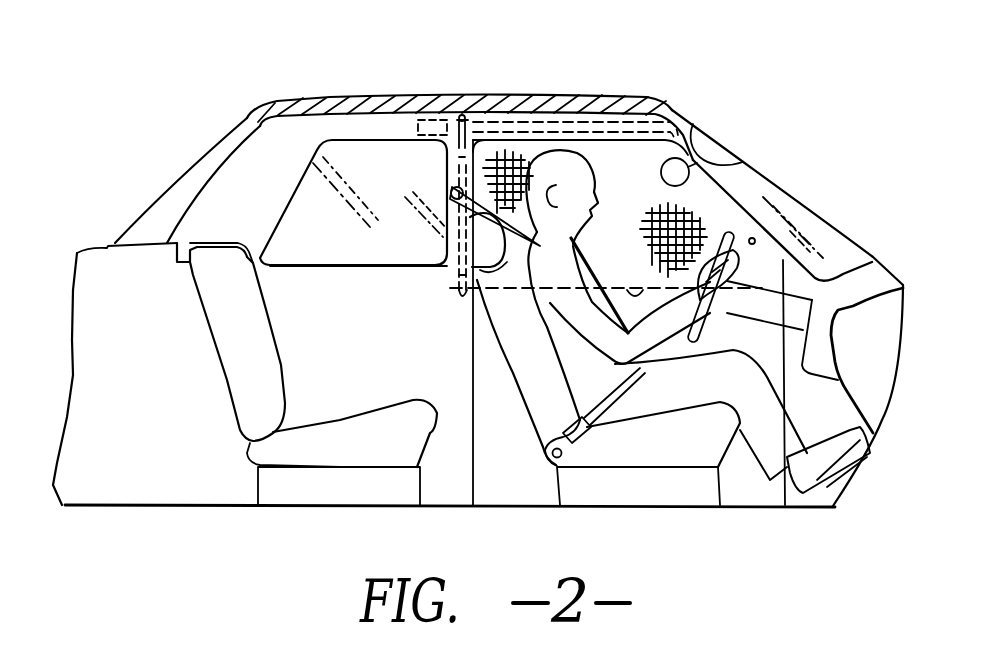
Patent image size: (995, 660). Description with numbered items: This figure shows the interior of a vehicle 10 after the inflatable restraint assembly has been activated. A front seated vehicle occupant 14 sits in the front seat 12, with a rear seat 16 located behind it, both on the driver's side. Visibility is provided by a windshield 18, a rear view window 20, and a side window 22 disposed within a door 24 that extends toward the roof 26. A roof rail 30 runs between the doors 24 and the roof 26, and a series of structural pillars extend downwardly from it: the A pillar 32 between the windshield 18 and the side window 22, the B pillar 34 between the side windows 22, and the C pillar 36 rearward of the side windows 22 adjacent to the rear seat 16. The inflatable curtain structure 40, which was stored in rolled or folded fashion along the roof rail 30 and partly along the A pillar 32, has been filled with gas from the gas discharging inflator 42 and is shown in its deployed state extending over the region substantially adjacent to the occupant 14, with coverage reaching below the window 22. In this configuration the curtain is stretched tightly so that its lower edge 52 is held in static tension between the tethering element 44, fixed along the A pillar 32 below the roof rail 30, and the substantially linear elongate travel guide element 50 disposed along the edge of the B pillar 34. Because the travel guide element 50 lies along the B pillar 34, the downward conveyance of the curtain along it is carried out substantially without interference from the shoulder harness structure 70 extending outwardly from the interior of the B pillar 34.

The vehicle 10 is at (716, 80).
The front seat 12 is at (537, 400).
The front seated vehicle occupant 14 is at (546, 160).
The rear seat 16 is at (225, 348).
The windshield 18 is at (790, 182).
The rear view window 20 is at (221, 142).
The side window 22 is at (416, 247).
The door 24 is at (312, 342).
The roof 26 is at (366, 97).
The roof rail 30 is at (344, 130).
The A pillar 32 is at (742, 150).
The B pillar 34 is at (423, 258).
The C pillar 36 is at (295, 199).
The inflatable curtain structure 40 is at (598, 115).
The gas discharging inflator 42 is at (430, 120).
The tethering element 44 is at (797, 232).
The travel guide element 50 is at (458, 293).
The lower edge 52 is at (623, 288).
The shoulder harness structure 70 is at (453, 182).